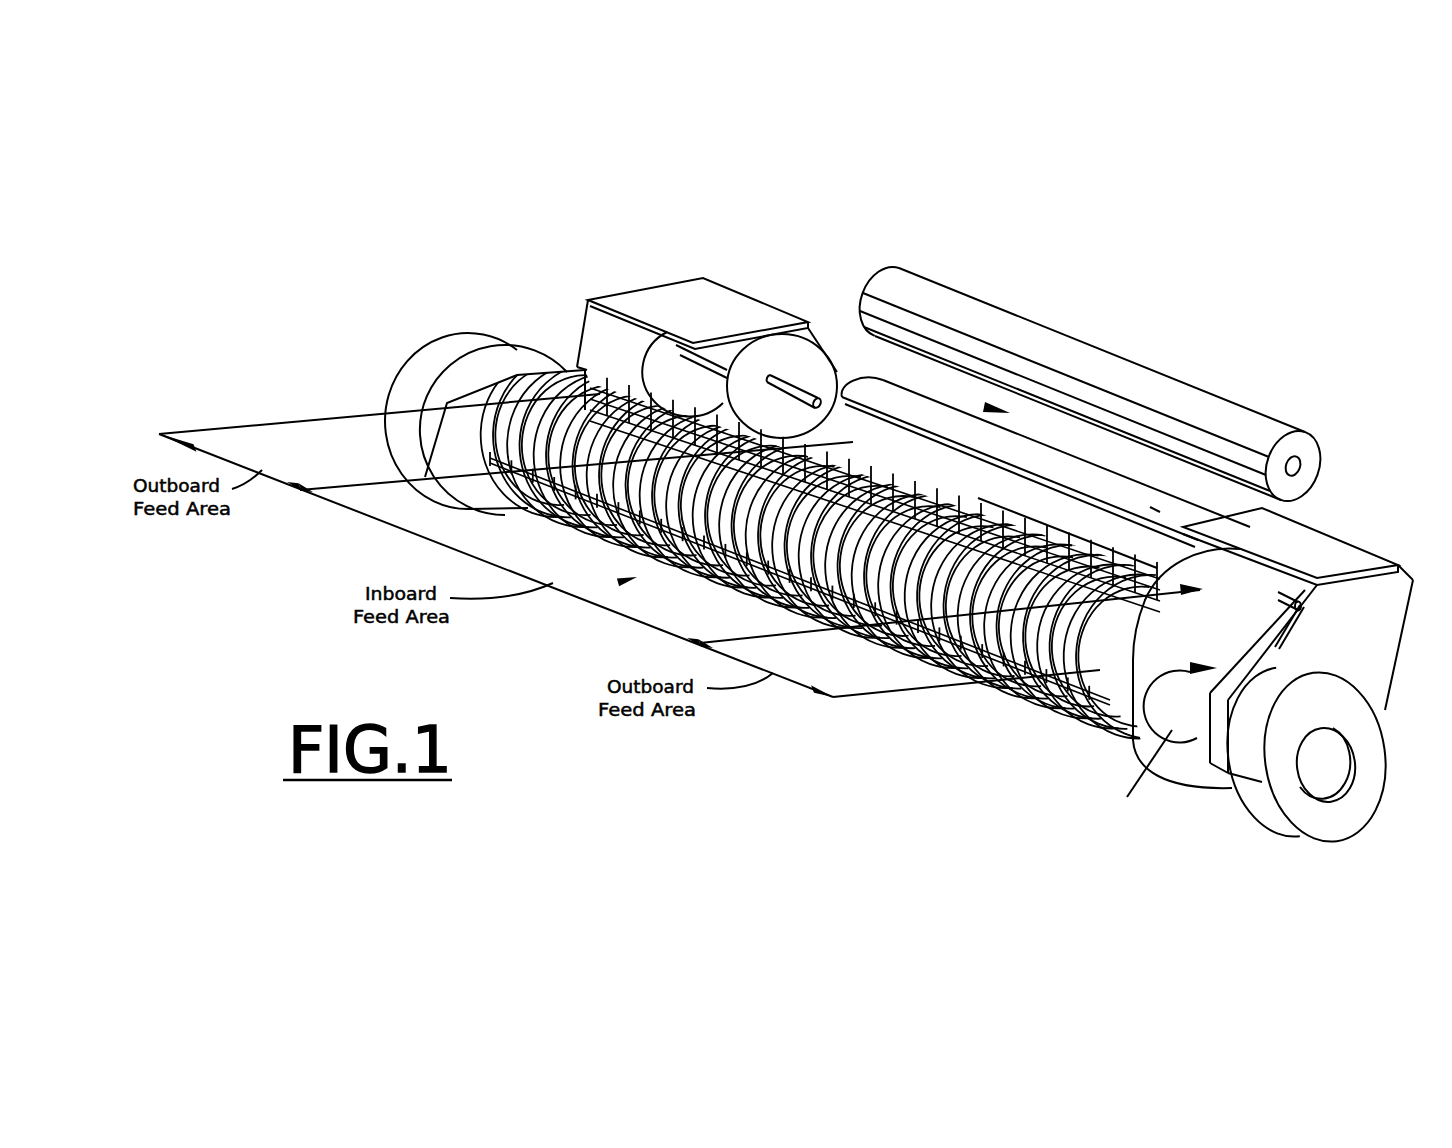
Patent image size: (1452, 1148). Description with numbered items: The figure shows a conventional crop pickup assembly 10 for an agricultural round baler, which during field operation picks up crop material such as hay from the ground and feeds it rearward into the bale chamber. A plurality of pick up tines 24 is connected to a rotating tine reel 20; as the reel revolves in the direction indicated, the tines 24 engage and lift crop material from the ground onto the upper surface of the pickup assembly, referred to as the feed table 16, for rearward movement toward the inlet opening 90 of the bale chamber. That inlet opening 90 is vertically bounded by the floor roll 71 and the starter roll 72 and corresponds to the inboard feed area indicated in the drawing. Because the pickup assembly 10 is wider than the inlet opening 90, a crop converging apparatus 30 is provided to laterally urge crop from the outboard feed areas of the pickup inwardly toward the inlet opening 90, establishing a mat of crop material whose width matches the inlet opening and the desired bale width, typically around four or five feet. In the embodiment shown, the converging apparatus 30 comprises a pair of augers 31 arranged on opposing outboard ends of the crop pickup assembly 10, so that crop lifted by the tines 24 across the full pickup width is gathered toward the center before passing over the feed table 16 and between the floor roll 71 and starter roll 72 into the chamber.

The crop pickup assembly 10 is at (488, 246).
The feed table 16 is at (990, 497).
The tine reel 20 is at (635, 578).
The pick up tines 24 is at (940, 668).
The crop converging apparatus 30 is at (675, 330).
The augers 31 is at (776, 350).
The floor roll 71 is at (1150, 507).
The starter roll 72 is at (1197, 400).
The inlet opening 90 is at (983, 405).